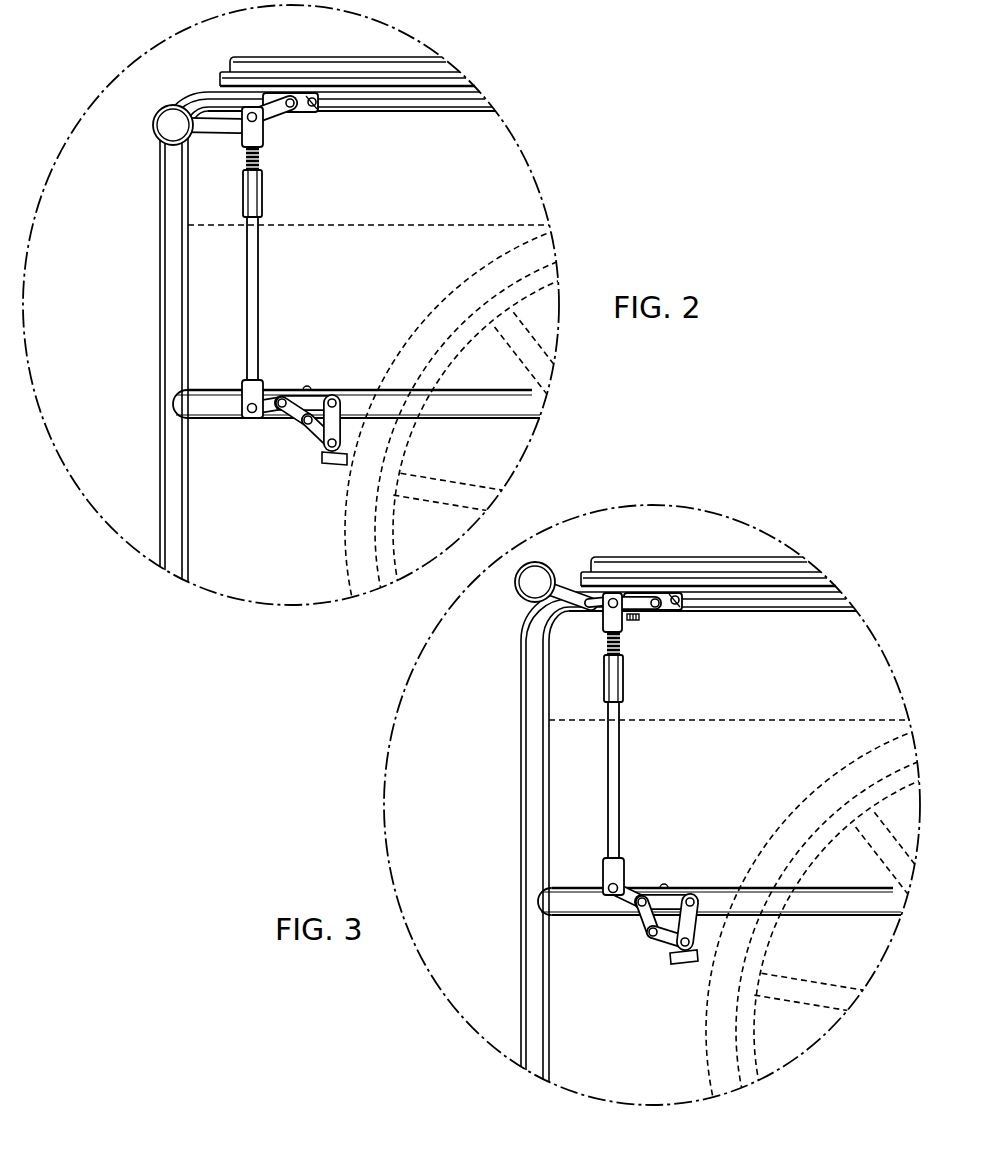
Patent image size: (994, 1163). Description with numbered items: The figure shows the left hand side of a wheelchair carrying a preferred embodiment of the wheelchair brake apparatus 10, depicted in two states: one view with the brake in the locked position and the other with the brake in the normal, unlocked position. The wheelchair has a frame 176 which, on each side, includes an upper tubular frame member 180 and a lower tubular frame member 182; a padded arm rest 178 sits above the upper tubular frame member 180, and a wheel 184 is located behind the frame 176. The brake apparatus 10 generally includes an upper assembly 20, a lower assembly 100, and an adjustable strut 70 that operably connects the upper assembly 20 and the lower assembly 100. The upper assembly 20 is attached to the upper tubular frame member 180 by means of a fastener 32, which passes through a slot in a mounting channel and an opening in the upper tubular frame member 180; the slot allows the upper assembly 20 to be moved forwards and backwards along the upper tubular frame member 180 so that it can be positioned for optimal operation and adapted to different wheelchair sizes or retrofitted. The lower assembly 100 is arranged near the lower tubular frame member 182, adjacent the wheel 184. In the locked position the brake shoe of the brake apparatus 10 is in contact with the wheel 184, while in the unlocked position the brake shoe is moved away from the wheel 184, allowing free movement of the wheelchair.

In FIG. 2, the wheelchair brake apparatus 10 is at (538, 141).
In FIG. 3, the wheelchair brake apparatus 10 is at (607, 805).
In FIG. 2, the upper assembly 20 is at (340, 162).
In FIG. 3, the upper assembly 20 is at (712, 601).
In FIG. 3, the fastener 32 is at (651, 635).
In FIG. 2, the adjustable strut 70 is at (281, 263).
In FIG. 3, the adjustable strut 70 is at (641, 745).
In FIG. 2, the lower assembly 100 is at (273, 463).
In FIG. 3, the lower assembly 100 is at (606, 763).
In FIG. 2, the frame 176 is at (160, 305).
In FIG. 3, the frame 176 is at (508, 837).
In FIG. 2, the padded arm rest 178 is at (356, 45).
In FIG. 3, the padded arm rest 178 is at (699, 537).
In FIG. 2, the upper tubular frame member 180 is at (385, 83).
In FIG. 3, the upper tubular frame member 180 is at (732, 570).
In FIG. 2, the lower tubular frame member 182 is at (381, 421).
In FIG. 3, the lower tubular frame member 182 is at (683, 906).
In FIG. 2, the wheel 184 is at (586, 531).
In FIG. 3, the wheel 184 is at (771, 937).